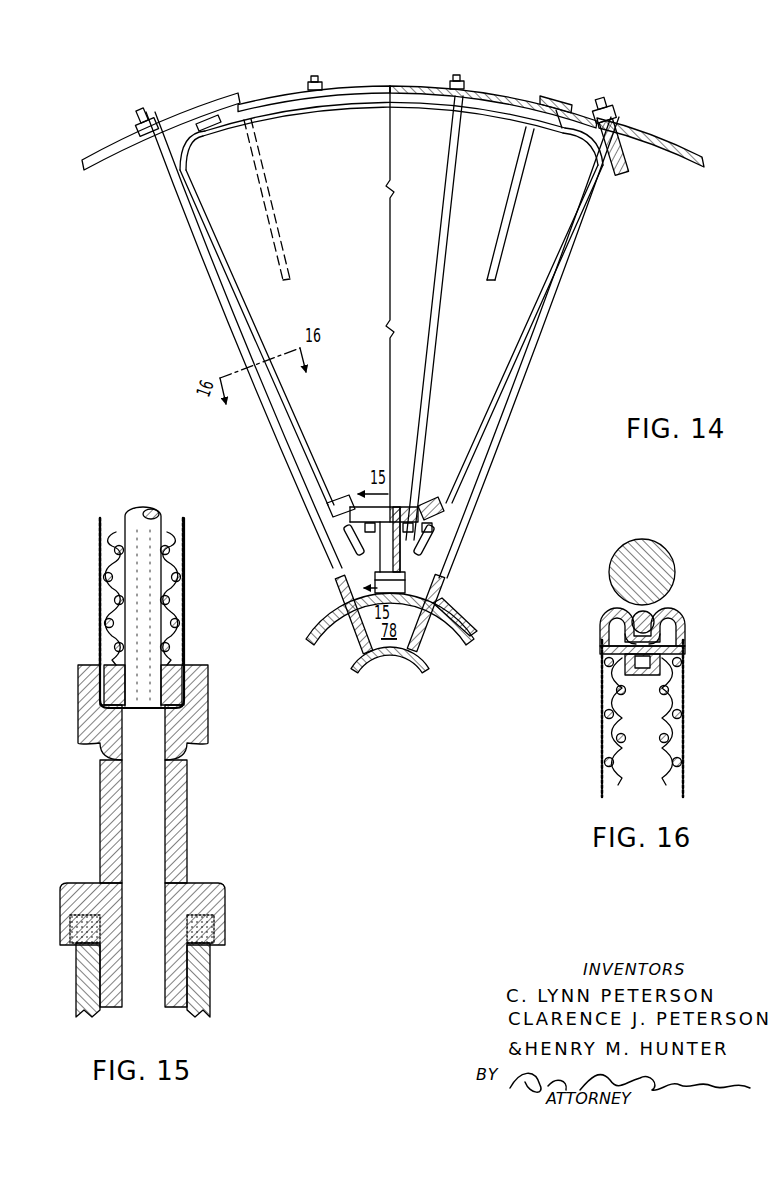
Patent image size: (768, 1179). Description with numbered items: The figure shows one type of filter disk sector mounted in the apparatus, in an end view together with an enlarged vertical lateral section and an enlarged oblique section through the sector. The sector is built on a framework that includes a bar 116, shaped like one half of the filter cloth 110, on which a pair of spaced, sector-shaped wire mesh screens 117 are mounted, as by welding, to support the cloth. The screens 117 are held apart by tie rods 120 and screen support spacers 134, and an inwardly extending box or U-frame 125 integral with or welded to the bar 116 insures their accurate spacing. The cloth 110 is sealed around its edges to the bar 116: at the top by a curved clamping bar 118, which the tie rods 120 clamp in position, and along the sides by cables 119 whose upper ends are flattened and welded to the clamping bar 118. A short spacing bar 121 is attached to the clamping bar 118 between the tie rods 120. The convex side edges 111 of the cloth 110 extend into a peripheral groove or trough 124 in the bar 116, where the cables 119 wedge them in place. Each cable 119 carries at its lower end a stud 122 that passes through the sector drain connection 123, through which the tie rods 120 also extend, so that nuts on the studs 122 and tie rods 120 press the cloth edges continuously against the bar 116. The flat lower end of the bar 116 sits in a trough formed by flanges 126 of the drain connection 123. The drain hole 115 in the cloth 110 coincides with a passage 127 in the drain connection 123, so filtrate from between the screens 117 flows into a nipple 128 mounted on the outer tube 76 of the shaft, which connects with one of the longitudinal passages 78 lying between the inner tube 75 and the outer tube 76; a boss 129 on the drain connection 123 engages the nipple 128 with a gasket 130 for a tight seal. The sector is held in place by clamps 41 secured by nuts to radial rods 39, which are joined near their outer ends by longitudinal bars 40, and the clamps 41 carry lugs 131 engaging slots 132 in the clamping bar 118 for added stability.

In FIG. 14, the rod 39 is at (316, 518).
In FIG. 16, the rod 39 is at (654, 560).
In FIG. 14, the longitudinal bar 40 is at (618, 168).
In FIG. 14, the clamp 41 is at (130, 143).
In FIG. 14, the inner pipe or tube 75 is at (392, 666).
In FIG. 14, the outer pipe or tube 76 is at (468, 615).
In FIG. 14, the longitudinal passage 78 is at (390, 619).
In FIG. 14, the filter cloth 110 is at (378, 188).
In FIG. 15, the filter cloth 110 is at (98, 548).
In FIG. 16, the filter cloth 110 is at (600, 746).
In FIG. 16, the side edge 111 is at (612, 627).
In FIG. 15, the drain hole 115 is at (143, 712).
In FIG. 14, the bar 116 is at (496, 390).
In FIG. 15, the bar 116 is at (184, 668).
In FIG. 16, the bar 116 is at (686, 625).
In FIG. 14, the screen 117 is at (512, 298).
In FIG. 15, the screen 117 is at (170, 590).
In FIG. 16, the screen 117 is at (610, 698).
In FIG. 14, the clamping bar 118 is at (283, 90).
In FIG. 14, the cable 119 is at (300, 455).
In FIG. 16, the cable 119 is at (652, 612).
In FIG. 14, the tie rod 120 is at (324, 84).
In FIG. 15, the tie rod 120 is at (150, 514).
In FIG. 14, the spacing bar 121 is at (362, 98).
In FIG. 14, the stud 122 is at (348, 548).
In FIG. 14, the sector drain connection 123 is at (442, 512).
In FIG. 15, the sector drain connection 123 is at (192, 756).
In FIG. 16, the peripheral groove or trough 124 is at (606, 650).
In FIG. 16, the box or U-frame 125 is at (662, 678).
In FIG. 15, the flange 126 is at (86, 694).
In FIG. 15, the passage 127 is at (150, 826).
In FIG. 14, the nipple 128 is at (404, 586).
In FIG. 15, the nipple 128 is at (202, 997).
In FIG. 14, the boss 129 is at (360, 584).
In FIG. 15, the boss 129 is at (220, 893).
In FIG. 15, the gasket 130 is at (215, 934).
In FIG. 14, the lug 131 is at (570, 104).
In FIG. 14, the slot 132 is at (570, 120).
In FIG. 14, the screen support spacer 134 is at (280, 262).